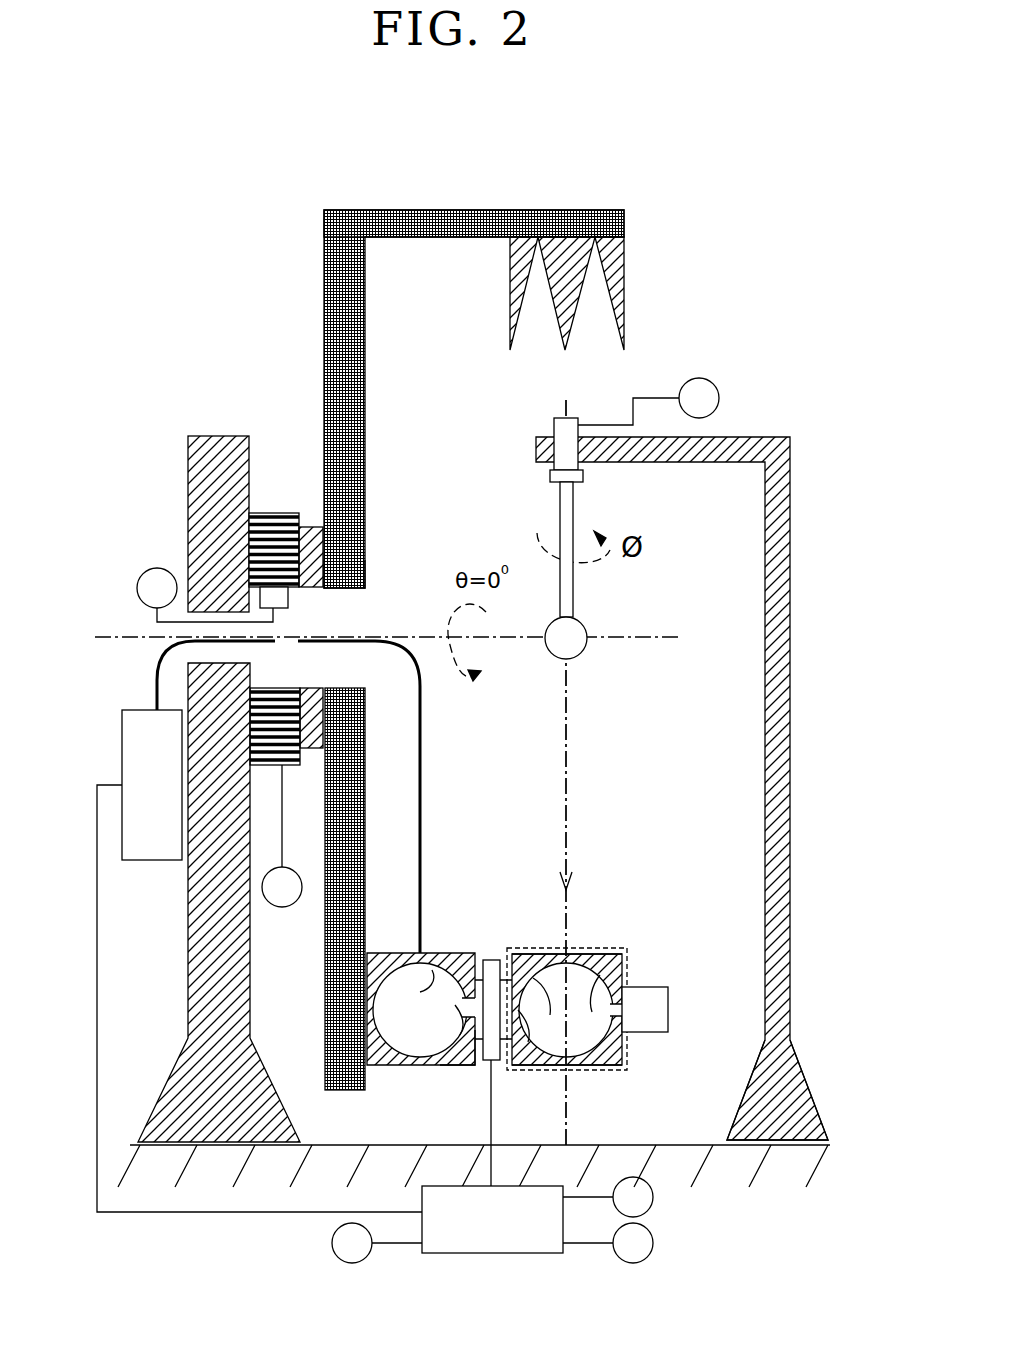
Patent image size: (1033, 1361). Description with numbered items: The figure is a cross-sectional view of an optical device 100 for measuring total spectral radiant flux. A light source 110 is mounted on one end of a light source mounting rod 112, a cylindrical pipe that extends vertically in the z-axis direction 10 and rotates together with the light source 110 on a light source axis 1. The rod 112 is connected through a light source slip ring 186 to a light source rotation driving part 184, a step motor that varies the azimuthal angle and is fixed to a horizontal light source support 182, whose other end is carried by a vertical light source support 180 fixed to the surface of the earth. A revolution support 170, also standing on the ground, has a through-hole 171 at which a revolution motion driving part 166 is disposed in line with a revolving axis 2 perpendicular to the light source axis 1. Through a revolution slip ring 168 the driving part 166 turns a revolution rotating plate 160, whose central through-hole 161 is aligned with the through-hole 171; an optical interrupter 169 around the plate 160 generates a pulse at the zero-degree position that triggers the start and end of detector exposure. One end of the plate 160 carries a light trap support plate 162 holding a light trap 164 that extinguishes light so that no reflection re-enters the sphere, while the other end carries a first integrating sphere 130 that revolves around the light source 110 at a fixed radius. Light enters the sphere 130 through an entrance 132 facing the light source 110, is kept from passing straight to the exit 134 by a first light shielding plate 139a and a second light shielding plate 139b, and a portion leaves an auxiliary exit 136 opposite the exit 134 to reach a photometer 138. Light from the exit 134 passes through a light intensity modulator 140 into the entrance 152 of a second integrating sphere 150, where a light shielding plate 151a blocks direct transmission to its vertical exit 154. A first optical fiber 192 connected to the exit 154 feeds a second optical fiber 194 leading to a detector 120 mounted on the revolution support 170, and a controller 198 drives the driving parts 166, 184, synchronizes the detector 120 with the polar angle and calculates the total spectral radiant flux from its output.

The optical device 100 is at (227, 246).
The light source axis 1 is at (568, 723).
The revolving axis 2 is at (525, 640).
The Z axis 10 is at (568, 845).
The light source 110 is at (586, 650).
The light source mounting rod 112 is at (575, 505).
The detector 120 is at (152, 862).
The first integrating sphere 130 is at (592, 1070).
The entrance 132 is at (566, 954).
The exit 134 is at (512, 1065).
The auxiliary exit 136 is at (640, 1000).
The photometer 138 is at (668, 1010).
The first light shielding plate 139a is at (555, 1011).
The second light shielding plate 139b is at (600, 985).
The light intensity modulator 140 is at (491, 960).
The second integrating sphere 150 is at (383, 1065).
The light shielding plate 151a is at (428, 1007).
The entrance 152 is at (470, 1065).
The exit 154 is at (418, 955).
The revolution rotating plate 160 is at (366, 340).
The through-hole 161 is at (350, 590).
The light trap support plate 162 is at (472, 210).
The light trap 164 is at (628, 287).
The revolution motion driving part 166 is at (273, 513).
The revolution slip ring 168 is at (316, 527).
The optical interrupter 169 is at (284, 609).
The revolution support 170 is at (188, 1001).
The through-hole 171 is at (220, 436).
The vertical light source support 180 is at (760, 1090).
The horizontal light source support 182 is at (780, 437).
The light source rotation driving part 184 is at (556, 418).
The light source slip ring 186 is at (550, 477).
The first optical fiber 192 is at (423, 785).
The second optical fiber 194 is at (152, 680).
The controller 198 is at (437, 1253).